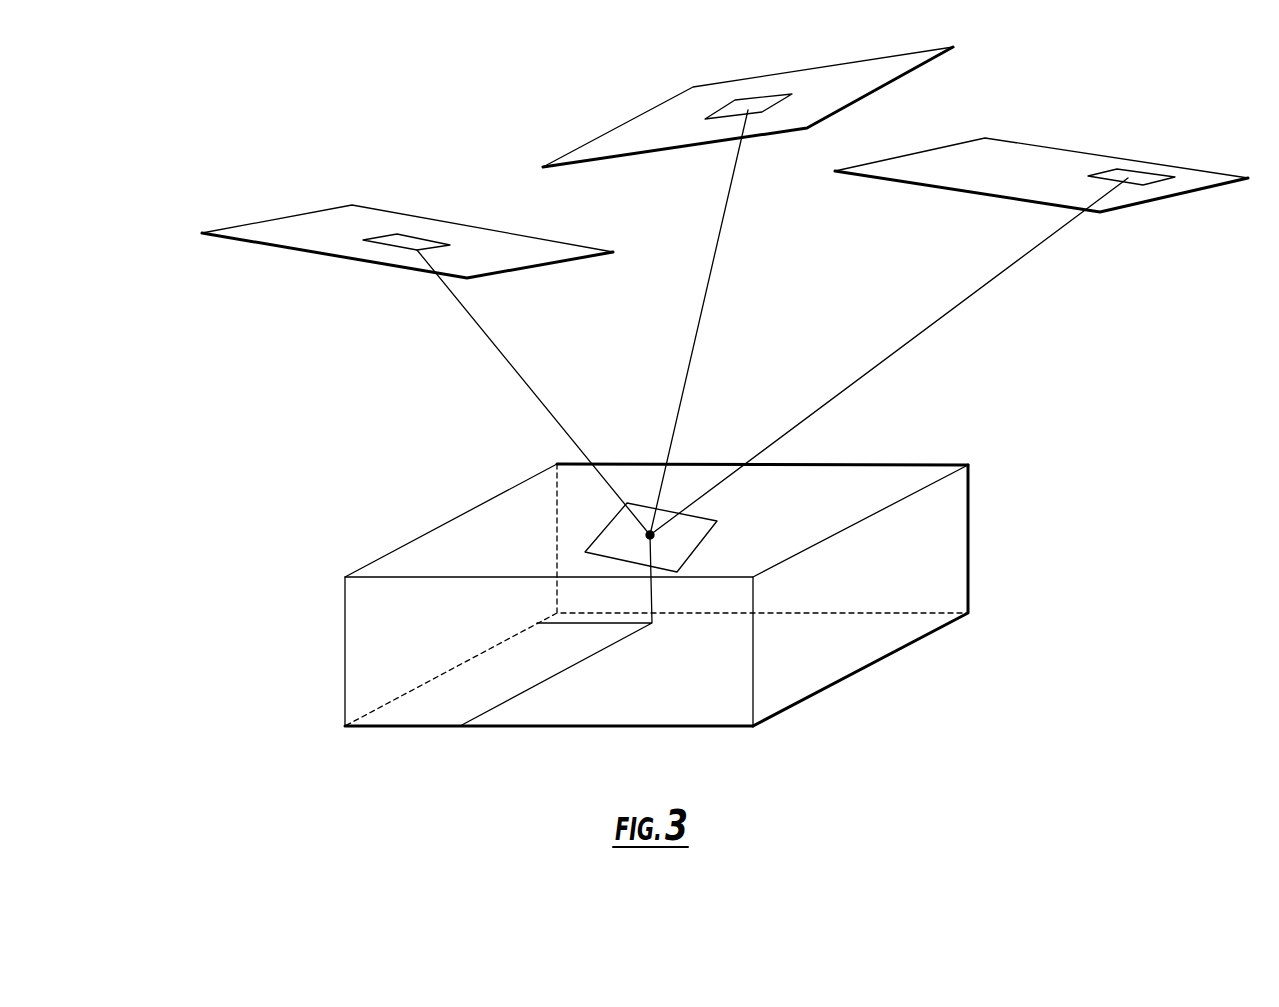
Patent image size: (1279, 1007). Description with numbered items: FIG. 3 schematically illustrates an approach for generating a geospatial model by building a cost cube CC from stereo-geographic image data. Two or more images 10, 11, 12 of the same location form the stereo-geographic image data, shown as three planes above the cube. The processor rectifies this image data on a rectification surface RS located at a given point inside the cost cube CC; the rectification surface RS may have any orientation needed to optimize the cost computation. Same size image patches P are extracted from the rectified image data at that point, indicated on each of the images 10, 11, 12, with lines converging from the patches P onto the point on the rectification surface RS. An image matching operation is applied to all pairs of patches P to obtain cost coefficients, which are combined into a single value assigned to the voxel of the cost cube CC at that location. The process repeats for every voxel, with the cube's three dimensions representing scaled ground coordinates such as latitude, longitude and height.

The image 10 is at (258, 222).
The image 11 is at (597, 140).
The image 12 is at (1062, 148).
The image patch P is at (385, 241).
The rectification surface RS is at (602, 530).
The cost cube cc is at (972, 525).